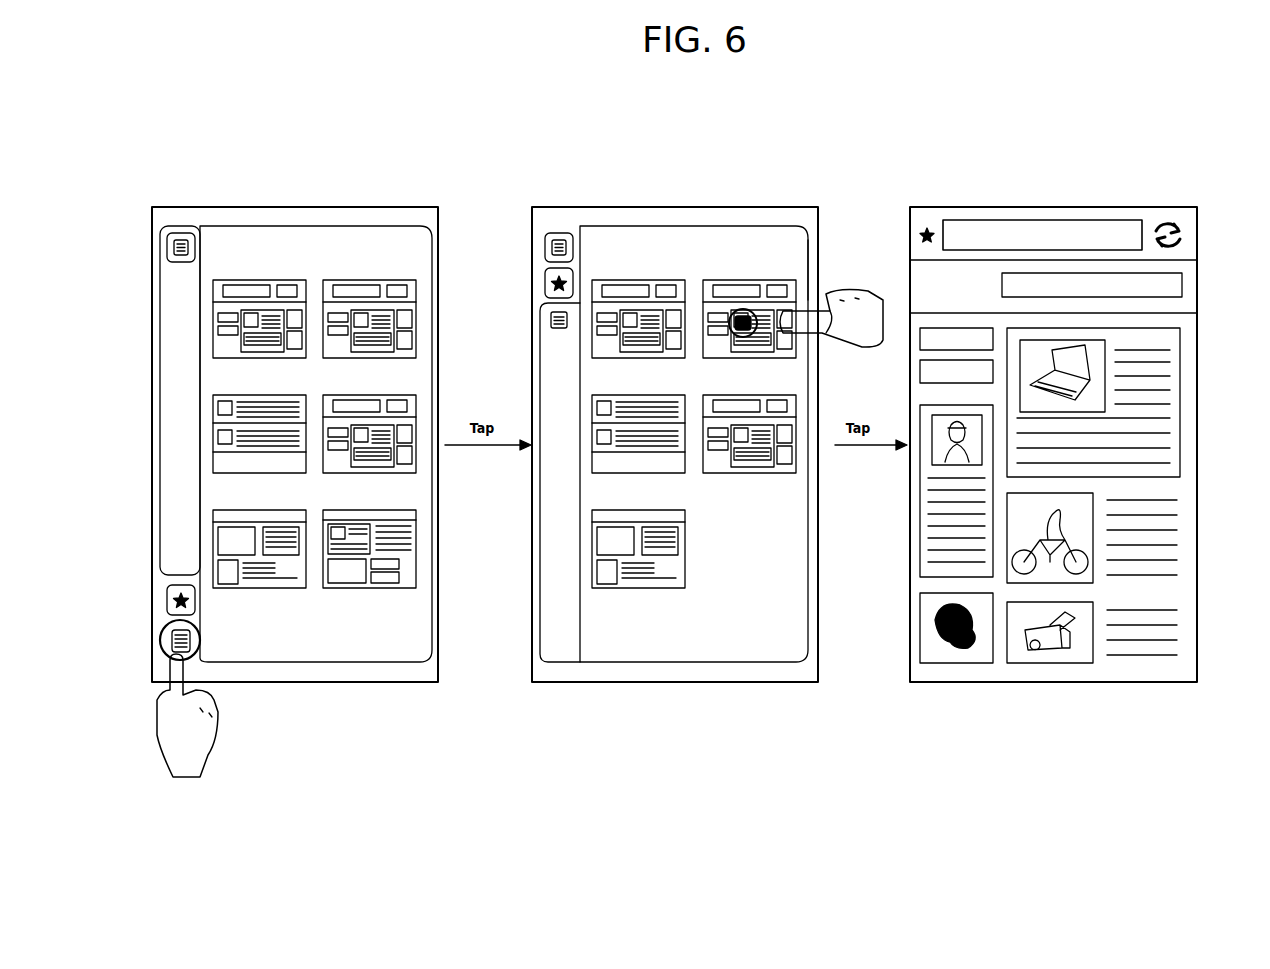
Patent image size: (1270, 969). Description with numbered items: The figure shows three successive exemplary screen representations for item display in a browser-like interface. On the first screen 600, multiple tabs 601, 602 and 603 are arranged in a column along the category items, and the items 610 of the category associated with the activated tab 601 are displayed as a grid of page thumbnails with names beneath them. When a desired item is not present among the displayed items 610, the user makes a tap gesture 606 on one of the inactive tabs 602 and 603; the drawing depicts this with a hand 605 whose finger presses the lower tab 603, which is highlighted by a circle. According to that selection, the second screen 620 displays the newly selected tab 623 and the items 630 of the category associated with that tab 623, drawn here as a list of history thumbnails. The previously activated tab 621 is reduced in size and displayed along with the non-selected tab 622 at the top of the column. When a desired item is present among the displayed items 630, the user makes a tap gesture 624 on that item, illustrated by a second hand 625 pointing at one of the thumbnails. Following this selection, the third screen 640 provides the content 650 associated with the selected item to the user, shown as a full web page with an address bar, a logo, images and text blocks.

The screen 600 is at (274, 184).
The activated tab 601 is at (170, 287).
The inactive tab 602 is at (167, 600).
The inactive tab 603 is at (168, 634).
The user hand / finger 605 is at (172, 745).
The tap gesture 606 is at (164, 652).
The items 610 is at (424, 325).
The screen 620 is at (654, 184).
The previously activated tab 621 is at (545, 248).
The non-selected tab 622 is at (545, 283).
The newly selected tab 623 is at (545, 386).
The tap gesture 624 is at (745, 309).
The user hand / finger 625 is at (858, 323).
The items 630 is at (808, 268).
The screen 640 is at (1034, 184).
The content 650 is at (1197, 357).